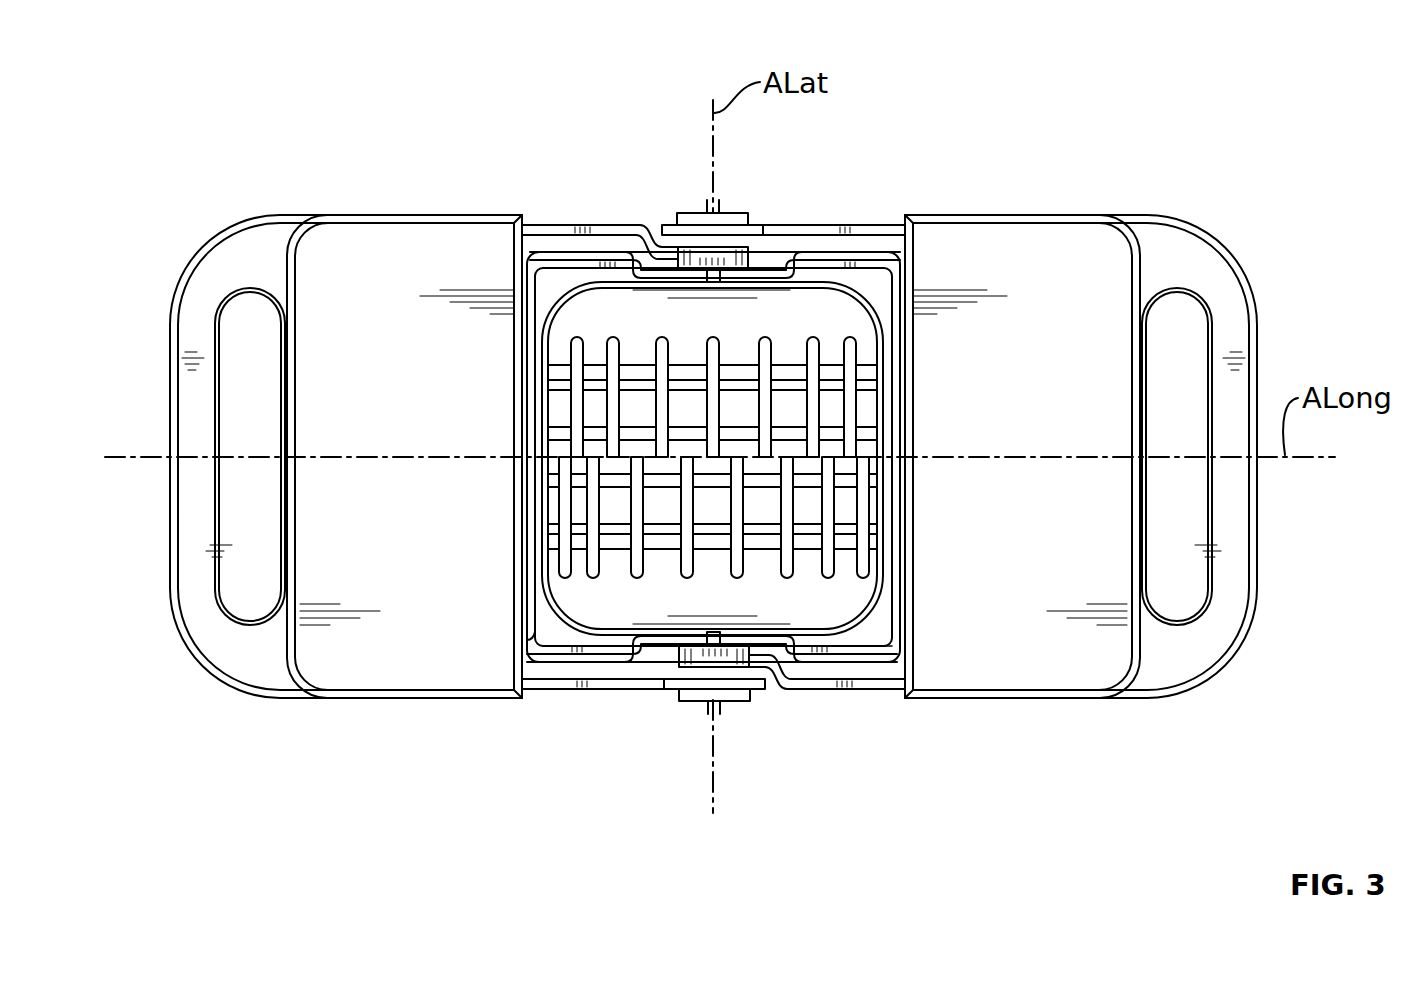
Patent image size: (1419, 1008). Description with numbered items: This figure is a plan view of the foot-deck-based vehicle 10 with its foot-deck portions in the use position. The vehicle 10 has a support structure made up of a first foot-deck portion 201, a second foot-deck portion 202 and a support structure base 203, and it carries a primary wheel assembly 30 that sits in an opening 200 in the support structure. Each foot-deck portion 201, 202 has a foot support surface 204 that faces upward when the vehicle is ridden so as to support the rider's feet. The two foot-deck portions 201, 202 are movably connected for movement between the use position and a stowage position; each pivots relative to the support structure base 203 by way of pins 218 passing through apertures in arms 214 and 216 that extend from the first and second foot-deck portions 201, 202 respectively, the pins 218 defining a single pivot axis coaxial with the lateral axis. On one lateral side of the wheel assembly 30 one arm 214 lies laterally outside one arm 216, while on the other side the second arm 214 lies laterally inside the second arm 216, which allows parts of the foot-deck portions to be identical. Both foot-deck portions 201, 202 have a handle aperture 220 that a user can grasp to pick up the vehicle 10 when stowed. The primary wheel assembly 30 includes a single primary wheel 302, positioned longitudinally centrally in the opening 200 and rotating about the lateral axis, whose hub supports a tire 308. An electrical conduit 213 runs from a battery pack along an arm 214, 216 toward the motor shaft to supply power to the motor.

The vehicle 10 is at (1208, 98).
The primary wheel assembly 30 is at (523, 638).
The opening 200 is at (877, 282).
The first foot-deck portion 201 is at (375, 228).
The second foot-deck portion 202 is at (1070, 235).
The support structure base 203 is at (848, 658).
The foot support surface 204 is at (375, 680).
The electrical conduit 213 is at (532, 225).
The arm 214 is at (613, 233).
The arm 216 is at (815, 227).
The pin 218 is at (705, 212).
The handle aperture 220 is at (253, 310).
The primary wheel 302 is at (614, 351).
The tire 308 is at (593, 310).